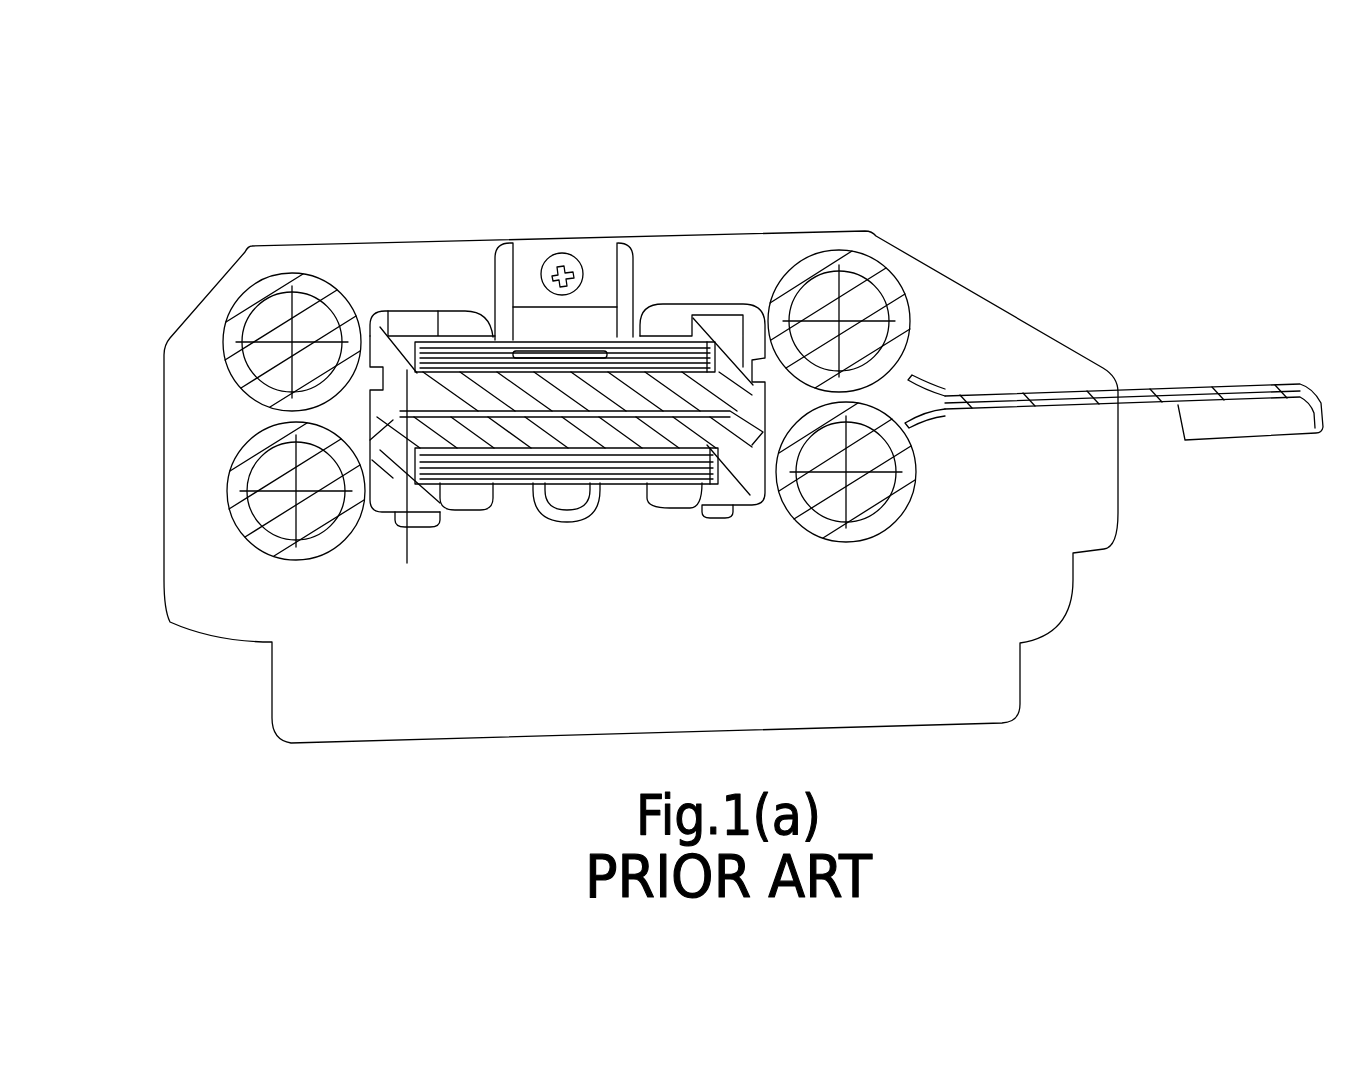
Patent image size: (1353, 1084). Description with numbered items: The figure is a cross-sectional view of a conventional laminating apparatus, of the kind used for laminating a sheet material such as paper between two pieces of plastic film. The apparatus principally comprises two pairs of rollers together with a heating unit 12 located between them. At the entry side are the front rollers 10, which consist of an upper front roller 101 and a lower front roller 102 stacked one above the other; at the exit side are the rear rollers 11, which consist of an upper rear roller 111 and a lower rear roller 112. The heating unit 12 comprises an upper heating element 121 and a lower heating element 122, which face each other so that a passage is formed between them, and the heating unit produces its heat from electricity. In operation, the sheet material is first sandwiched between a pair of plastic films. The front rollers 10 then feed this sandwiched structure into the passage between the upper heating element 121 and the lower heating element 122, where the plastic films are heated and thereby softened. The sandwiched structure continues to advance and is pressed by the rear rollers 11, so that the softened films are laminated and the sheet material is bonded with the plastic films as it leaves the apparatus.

The front rollers 10 is at (227, 480).
The upper front roller 101 is at (297, 300).
The lower front roller 102 is at (273, 522).
The rear rollers 11 is at (918, 453).
The upper rear roller 111 is at (850, 263).
The lower rear roller 112 is at (907, 488).
The heating unit 12 is at (610, 415).
The upper heating element 121 is at (600, 348).
The lower heating element 122 is at (528, 466).